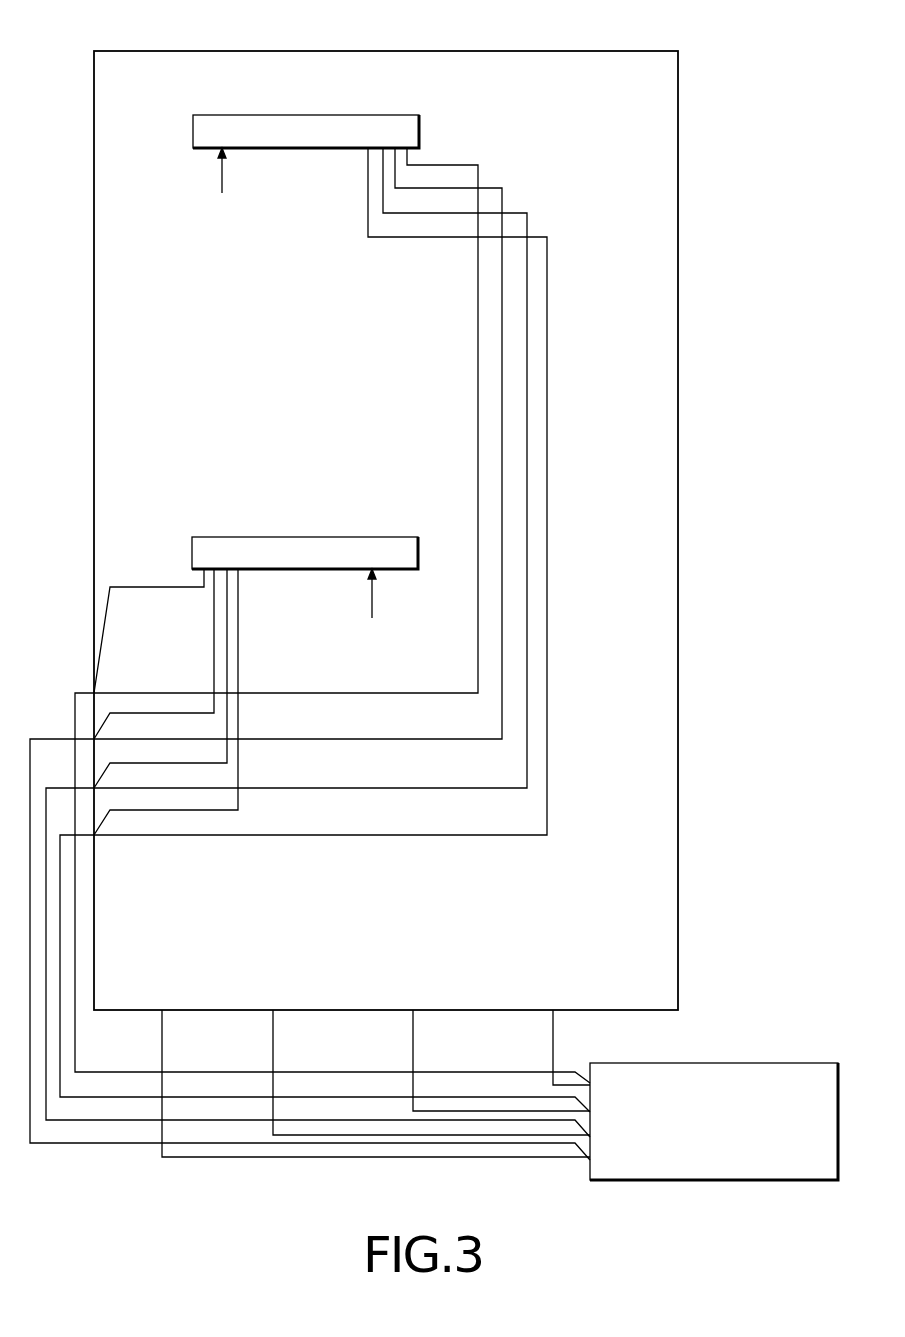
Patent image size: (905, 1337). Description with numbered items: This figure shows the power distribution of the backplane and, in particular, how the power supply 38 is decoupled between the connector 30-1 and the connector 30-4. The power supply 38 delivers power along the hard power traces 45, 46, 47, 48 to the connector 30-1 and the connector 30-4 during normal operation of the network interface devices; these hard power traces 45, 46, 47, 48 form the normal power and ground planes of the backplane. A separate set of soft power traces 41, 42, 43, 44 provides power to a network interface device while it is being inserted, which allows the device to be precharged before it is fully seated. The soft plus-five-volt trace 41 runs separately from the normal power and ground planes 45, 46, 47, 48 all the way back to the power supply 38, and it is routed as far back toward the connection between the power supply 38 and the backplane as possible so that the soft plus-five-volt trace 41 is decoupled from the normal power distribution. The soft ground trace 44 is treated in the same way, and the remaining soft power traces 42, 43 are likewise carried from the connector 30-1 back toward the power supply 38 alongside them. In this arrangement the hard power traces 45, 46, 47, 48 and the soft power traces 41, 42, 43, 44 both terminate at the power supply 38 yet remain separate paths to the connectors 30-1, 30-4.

The connector 30-1 is at (378, 115).
The connector 30-4 is at (350, 537).
The soft +5 trace 41 is at (478, 310).
The soft power trace 42 is at (502, 197).
The soft power trace 43 is at (527, 222).
The soft ground trace 44 is at (547, 257).
The hard power trace 45 is at (162, 1030).
The hard power trace 46 is at (273, 1030).
The hard power trace 47 is at (413, 1042).
The hard power trace 48 is at (553, 1037).
The power supply 38 is at (707, 1063).